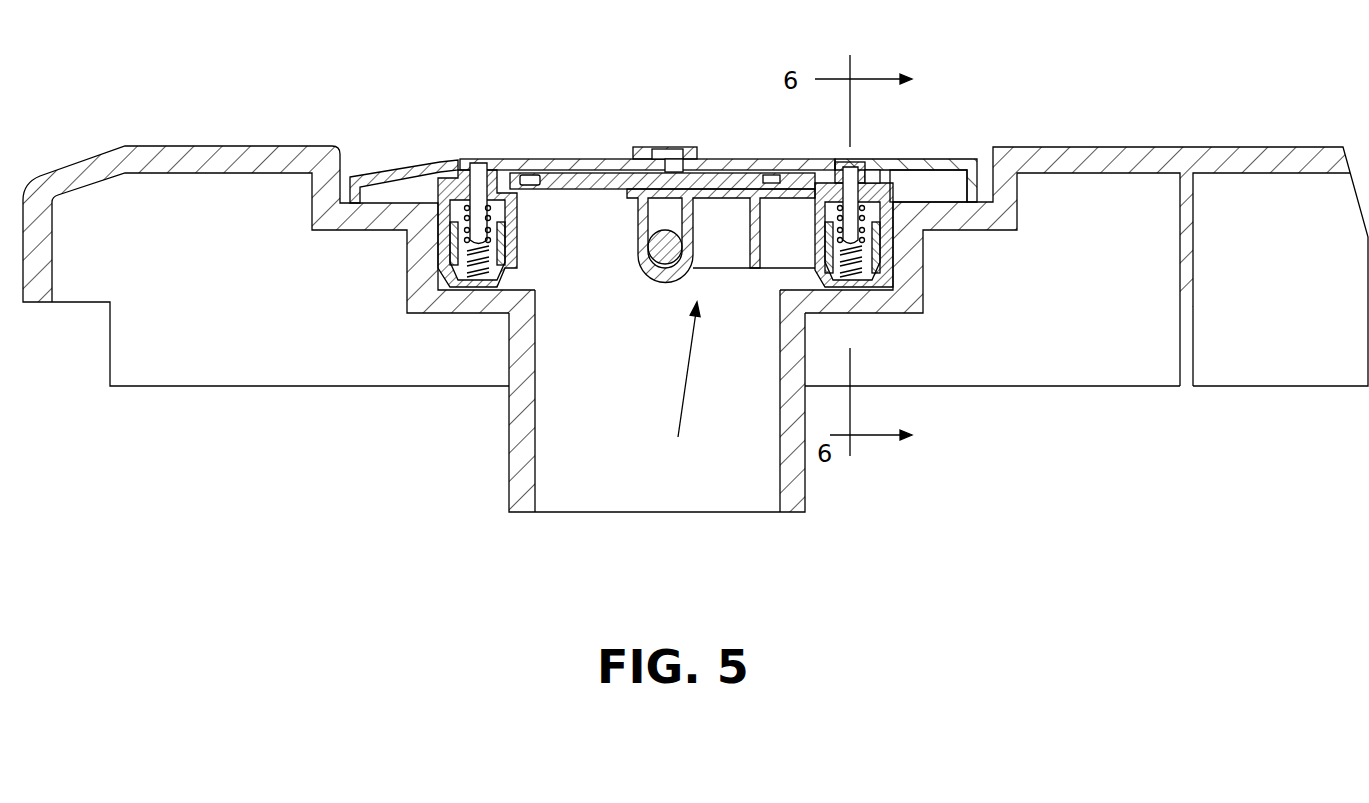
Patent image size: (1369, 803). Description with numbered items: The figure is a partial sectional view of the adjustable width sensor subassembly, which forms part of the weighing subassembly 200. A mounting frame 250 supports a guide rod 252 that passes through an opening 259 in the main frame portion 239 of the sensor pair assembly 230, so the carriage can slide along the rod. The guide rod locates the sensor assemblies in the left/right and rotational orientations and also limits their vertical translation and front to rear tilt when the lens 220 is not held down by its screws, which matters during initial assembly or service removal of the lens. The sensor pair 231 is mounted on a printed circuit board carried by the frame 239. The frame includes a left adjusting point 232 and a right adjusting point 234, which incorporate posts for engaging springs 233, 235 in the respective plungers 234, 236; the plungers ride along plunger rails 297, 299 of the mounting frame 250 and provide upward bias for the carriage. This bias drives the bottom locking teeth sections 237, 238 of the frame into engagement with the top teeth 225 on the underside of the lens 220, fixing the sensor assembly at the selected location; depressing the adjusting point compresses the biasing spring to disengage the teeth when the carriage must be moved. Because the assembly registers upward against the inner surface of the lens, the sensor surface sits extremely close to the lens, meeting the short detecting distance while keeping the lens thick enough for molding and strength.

The weighing subassembly 200 is at (1167, 150).
The lens 220 is at (738, 159).
The top teeth 225 is at (888, 168).
The sensor pair assembly 230 is at (679, 388).
The sensor pair 231 is at (673, 158).
The left adjusting point 232 is at (492, 163).
The spring 233 is at (467, 253).
The right adjusting point 234 is at (450, 268).
The spring 235 is at (862, 248).
The plunger 236 is at (875, 280).
The bottom locking teeth section 237 is at (450, 173).
The bottom locking teeth section 238 is at (877, 180).
The main frame portion 239 is at (732, 258).
The mounting frame 250 is at (510, 443).
The guide rod 252 is at (655, 260).
The opening 259 is at (668, 282).
The plunger rail 297 is at (480, 287).
The plunger rail 299 is at (850, 293).